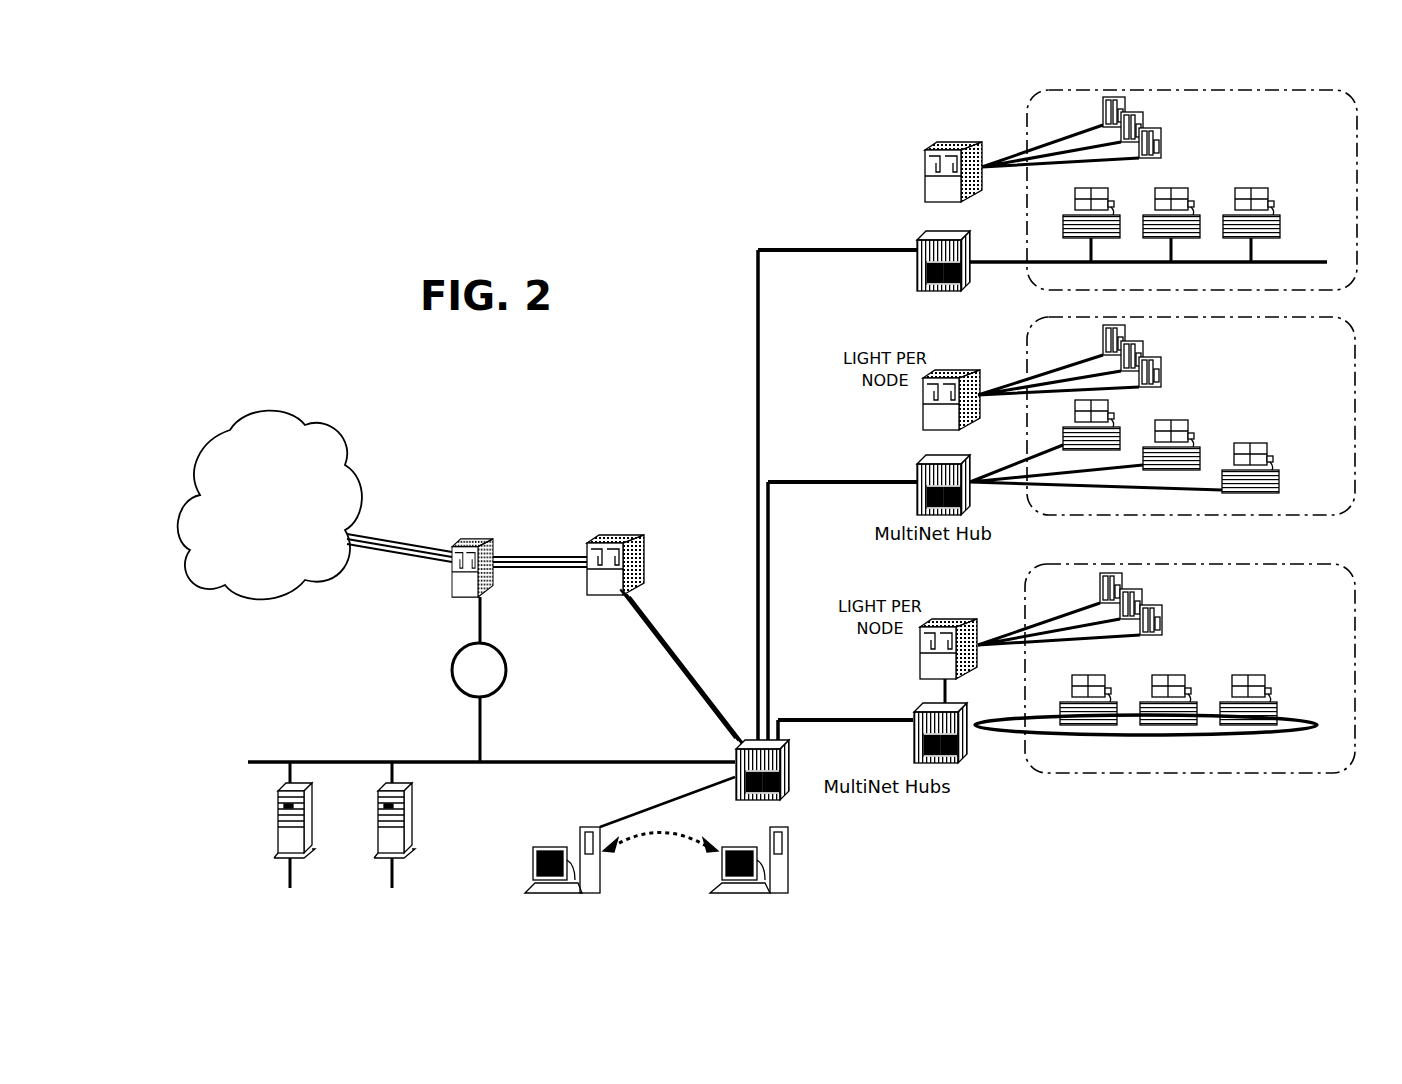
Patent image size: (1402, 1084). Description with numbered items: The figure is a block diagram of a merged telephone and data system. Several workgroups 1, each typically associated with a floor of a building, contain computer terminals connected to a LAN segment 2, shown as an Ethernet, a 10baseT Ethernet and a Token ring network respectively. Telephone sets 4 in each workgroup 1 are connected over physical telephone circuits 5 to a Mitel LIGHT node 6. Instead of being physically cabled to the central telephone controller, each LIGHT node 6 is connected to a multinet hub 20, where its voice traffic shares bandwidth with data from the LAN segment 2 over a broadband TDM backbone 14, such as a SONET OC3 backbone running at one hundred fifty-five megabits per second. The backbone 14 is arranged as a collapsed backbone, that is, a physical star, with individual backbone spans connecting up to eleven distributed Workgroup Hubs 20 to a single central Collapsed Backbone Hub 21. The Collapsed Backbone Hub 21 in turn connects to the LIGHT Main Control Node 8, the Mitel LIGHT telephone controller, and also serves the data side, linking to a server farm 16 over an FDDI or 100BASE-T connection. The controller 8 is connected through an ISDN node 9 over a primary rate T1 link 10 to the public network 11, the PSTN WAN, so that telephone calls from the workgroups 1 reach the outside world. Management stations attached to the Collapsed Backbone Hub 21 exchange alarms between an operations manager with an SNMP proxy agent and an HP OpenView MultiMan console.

The workgroup 1 is at (1362, 166).
The LAN segment 2 is at (995, 263).
The telephone set 4 is at (1163, 618).
The physical telephone circuit 5 is at (1080, 638).
The Mitel LIGHT node 6 is at (925, 157).
The Mitel LIGHT telephone controller 8 is at (602, 578).
The ISDN node 9 is at (450, 582).
The primary rate T1 link 10 is at (375, 538).
The public network 11 is at (283, 440).
The backbone 14 is at (760, 385).
The server farm 16 is at (407, 808).
The multinet hub 20 is at (920, 248).
The Collapsed Backbone Hub 21 is at (790, 783).